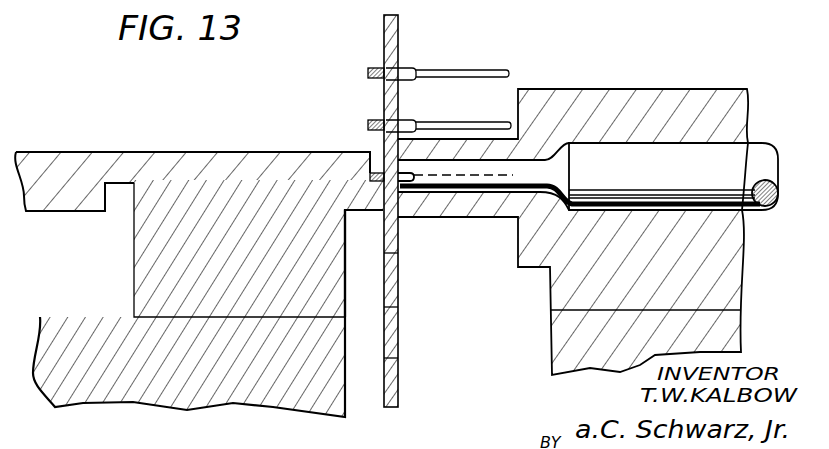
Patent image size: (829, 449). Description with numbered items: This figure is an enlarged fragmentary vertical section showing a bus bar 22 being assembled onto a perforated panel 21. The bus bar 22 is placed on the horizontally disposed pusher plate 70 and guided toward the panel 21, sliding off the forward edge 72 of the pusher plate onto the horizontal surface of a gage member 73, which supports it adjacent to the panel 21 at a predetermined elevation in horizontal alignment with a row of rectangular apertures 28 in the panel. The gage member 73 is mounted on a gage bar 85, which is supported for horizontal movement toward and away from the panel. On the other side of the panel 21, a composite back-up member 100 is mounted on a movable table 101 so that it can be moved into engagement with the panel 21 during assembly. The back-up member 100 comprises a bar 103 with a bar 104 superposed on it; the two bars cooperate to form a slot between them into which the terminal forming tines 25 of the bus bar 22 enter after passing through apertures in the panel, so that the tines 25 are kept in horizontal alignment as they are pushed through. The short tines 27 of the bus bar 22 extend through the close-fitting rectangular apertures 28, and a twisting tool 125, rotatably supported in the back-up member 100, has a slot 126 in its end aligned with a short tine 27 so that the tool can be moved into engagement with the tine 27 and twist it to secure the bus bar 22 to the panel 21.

The perforated panel 21 is at (390, 38).
The first bus bar 22 is at (373, 121).
The terminal forming tine 25 is at (483, 120).
The short tine 27 is at (407, 120).
The rectangular aperture 28 is at (386, 307).
The pusher plate 70 is at (68, 171).
The forward edge of pusher plate 72 is at (377, 157).
The gage member 73 is at (165, 245).
The gage bar 85 is at (85, 343).
The composite back-up member 100 is at (703, 80).
The movable table 101 is at (590, 339).
The bar 103 is at (703, 279).
The superposed bar 104 is at (730, 113).
The twisting tool 125 is at (597, 160).
The slot 126 is at (403, 184).